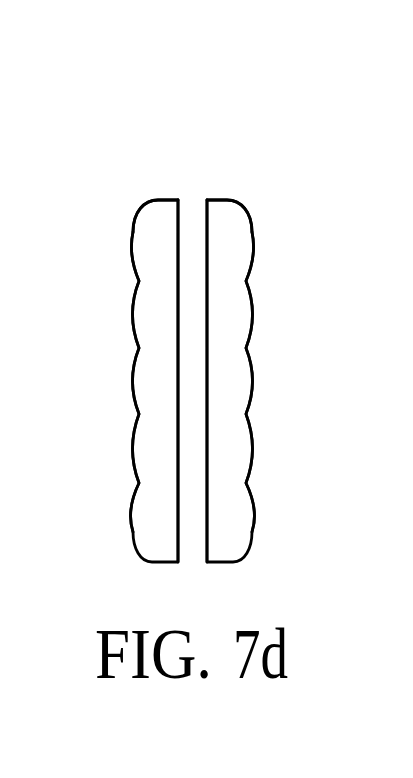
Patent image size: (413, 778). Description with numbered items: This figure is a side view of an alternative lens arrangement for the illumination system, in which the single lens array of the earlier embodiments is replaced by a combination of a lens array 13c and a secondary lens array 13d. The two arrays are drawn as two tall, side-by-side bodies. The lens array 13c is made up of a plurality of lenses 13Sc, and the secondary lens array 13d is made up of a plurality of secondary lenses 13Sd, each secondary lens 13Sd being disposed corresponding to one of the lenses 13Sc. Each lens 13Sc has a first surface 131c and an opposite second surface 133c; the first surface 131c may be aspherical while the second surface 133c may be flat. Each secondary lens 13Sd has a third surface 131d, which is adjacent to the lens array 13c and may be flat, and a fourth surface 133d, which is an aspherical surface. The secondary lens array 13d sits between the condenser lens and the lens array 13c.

The secondary lens array 13d is at (160, 200).
The lens array 13c is at (230, 200).
The fourth surface 133d is at (133, 230).
The first surface 131c is at (276, 232).
The secondary lens 13Sd is at (153, 250).
The lens 13Sc is at (235, 252).
The third surface 131d is at (189, 270).
The second surface 133c is at (196, 236).